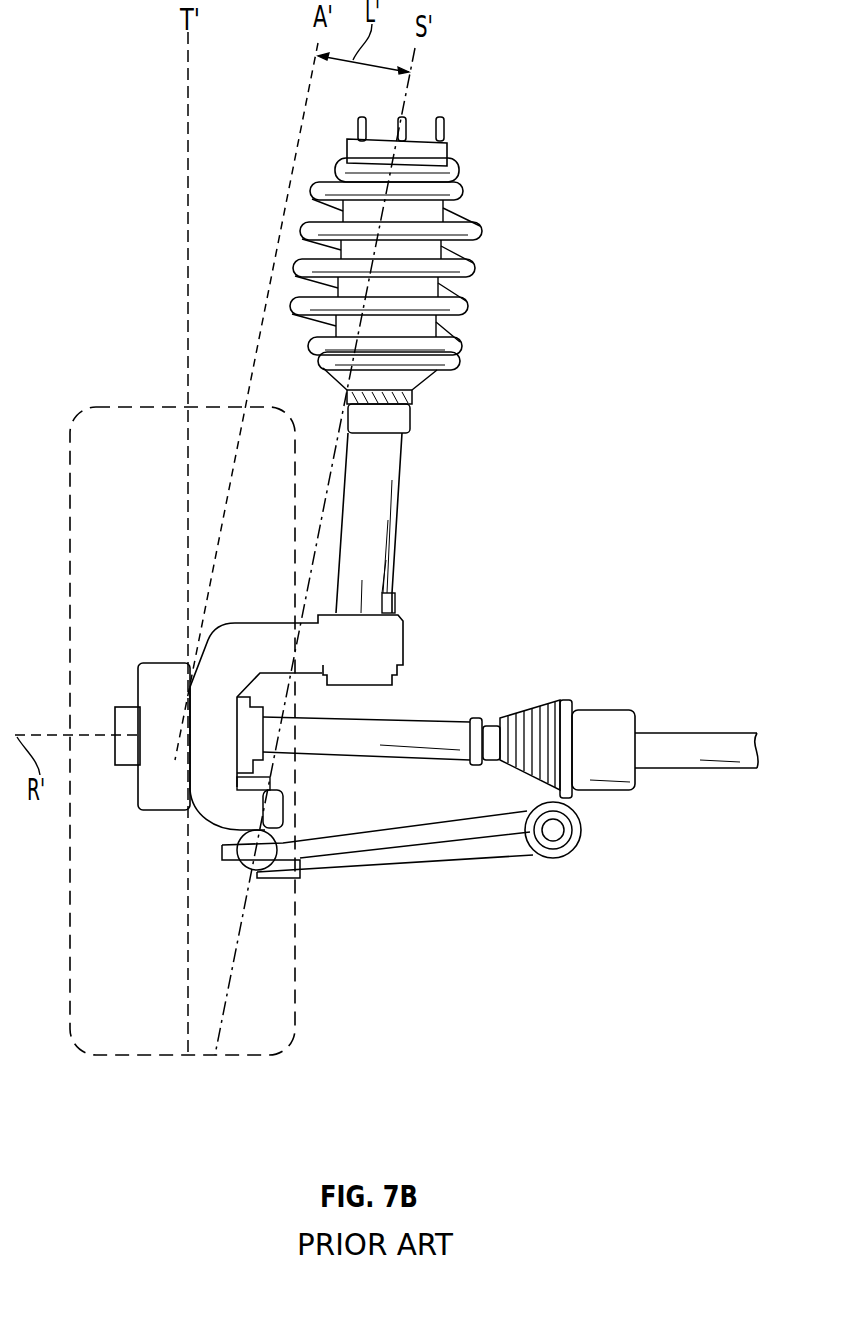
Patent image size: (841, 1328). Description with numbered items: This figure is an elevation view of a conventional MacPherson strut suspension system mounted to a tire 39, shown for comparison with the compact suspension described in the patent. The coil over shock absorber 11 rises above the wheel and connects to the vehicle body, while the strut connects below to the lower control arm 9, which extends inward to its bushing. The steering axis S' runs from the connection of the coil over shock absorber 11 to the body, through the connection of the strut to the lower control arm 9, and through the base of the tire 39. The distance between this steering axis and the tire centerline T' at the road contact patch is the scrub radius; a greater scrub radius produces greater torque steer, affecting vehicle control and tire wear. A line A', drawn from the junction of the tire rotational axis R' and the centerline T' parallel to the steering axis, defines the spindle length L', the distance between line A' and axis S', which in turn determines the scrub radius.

The tire 39 is at (103, 408).
The coil over shock absorber 11 is at (478, 210).
The lower control arm 9 is at (455, 852).